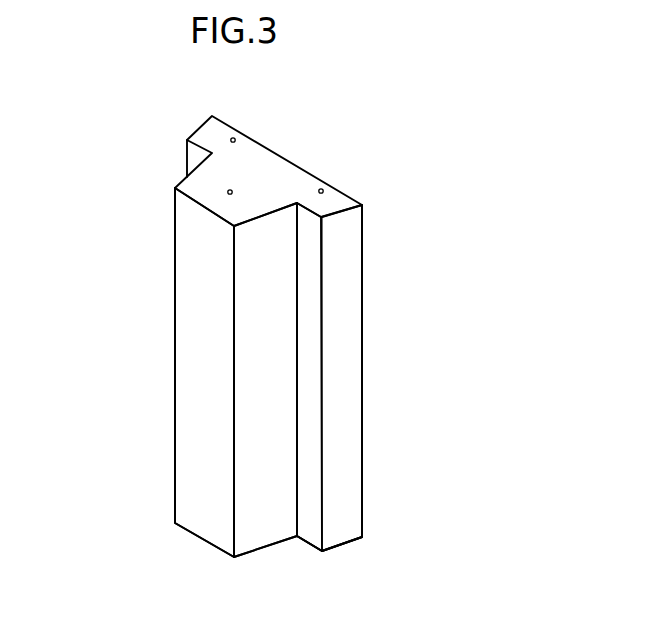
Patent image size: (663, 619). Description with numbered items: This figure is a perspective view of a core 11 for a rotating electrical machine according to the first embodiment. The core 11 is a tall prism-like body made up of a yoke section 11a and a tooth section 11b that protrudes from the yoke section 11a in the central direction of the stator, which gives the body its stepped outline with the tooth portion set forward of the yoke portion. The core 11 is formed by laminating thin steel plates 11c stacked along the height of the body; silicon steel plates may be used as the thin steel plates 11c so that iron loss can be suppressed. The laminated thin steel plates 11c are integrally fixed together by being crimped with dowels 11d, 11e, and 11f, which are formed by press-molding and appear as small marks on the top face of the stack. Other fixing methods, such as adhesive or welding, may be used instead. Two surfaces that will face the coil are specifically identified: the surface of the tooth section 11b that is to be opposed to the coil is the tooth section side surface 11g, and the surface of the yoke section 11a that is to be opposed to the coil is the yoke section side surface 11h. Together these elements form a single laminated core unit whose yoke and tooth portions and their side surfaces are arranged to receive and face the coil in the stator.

The core 11 is at (95, 127).
The yoke section 11a is at (348, 278).
The tooth section 11b is at (197, 343).
The thin steel plates 11c is at (345, 535).
The dowel 11d is at (324, 188).
The dowel 11e is at (236, 138).
The dowel 11f is at (228, 193).
The tooth section side surface 11g is at (273, 407).
The yoke section side surface 11h is at (313, 378).